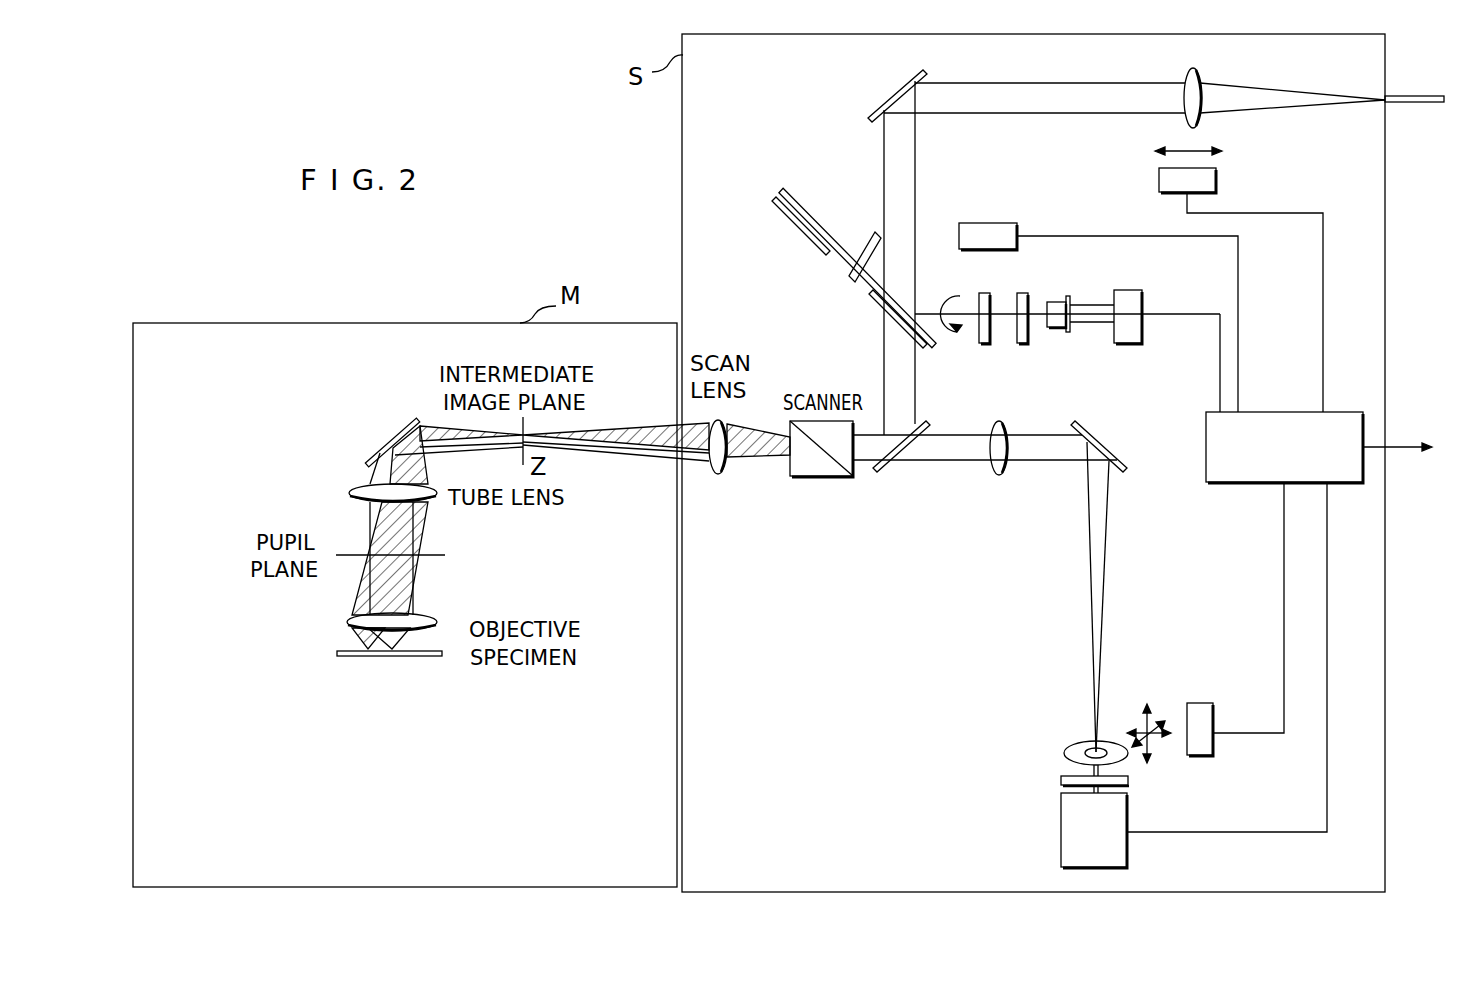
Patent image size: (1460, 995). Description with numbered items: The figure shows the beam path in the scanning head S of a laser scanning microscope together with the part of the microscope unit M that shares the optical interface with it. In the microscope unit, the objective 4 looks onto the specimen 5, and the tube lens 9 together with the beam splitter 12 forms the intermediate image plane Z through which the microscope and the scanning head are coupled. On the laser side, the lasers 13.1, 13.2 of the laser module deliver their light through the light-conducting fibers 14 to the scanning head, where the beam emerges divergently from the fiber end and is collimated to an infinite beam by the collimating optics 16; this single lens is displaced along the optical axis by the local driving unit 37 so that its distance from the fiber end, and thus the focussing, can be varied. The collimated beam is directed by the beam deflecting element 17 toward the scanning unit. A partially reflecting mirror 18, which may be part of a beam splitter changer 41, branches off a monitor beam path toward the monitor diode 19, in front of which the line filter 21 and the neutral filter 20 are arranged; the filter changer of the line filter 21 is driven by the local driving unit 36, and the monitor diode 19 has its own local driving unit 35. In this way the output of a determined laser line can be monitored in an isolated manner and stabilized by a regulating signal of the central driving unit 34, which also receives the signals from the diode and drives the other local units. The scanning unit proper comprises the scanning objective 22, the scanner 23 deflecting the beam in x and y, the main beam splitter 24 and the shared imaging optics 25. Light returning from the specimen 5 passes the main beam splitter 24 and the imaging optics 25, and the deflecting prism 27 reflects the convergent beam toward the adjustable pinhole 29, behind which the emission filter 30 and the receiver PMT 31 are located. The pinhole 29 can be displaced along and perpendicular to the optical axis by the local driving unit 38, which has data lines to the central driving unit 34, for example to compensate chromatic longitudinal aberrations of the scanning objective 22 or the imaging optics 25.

The objective 4 is at (352, 627).
The specimen 5 is at (372, 657).
The tube lens 9 is at (352, 491).
The beam splitter 12 is at (380, 456).
The laser 13.1 is at (1405, 434).
The laser 13.2 is at (1422, 465).
The light-conducting fibers 14 is at (1412, 96).
The collimating optics 16 is at (1199, 82).
The beam deflecting element 17 is at (870, 112).
The partially reflecting mirror 18 is at (790, 215).
The monitor diode 19 is at (1052, 329).
The neutral filter 20 is at (1016, 346).
The line filter 21 is at (980, 346).
The scanning objective 22 is at (722, 476).
The scanner 23 is at (816, 478).
The main beam splitter 24 is at (880, 474).
The imaging optics 25 is at (1003, 476).
The deflecting prism 27 is at (1107, 447).
The adjustable pinhole 29 is at (1066, 760).
The emission filter 30 is at (1130, 782).
The PMT 31 is at (1060, 824).
The central driving unit 34 is at (1252, 466).
The local driving unit 35 is at (1143, 335).
The local driving unit 36 is at (962, 223).
The local driving unit 37 is at (1218, 184).
The local driving unit 38 is at (1214, 750).
The beam splitter changer 41 is at (851, 240).